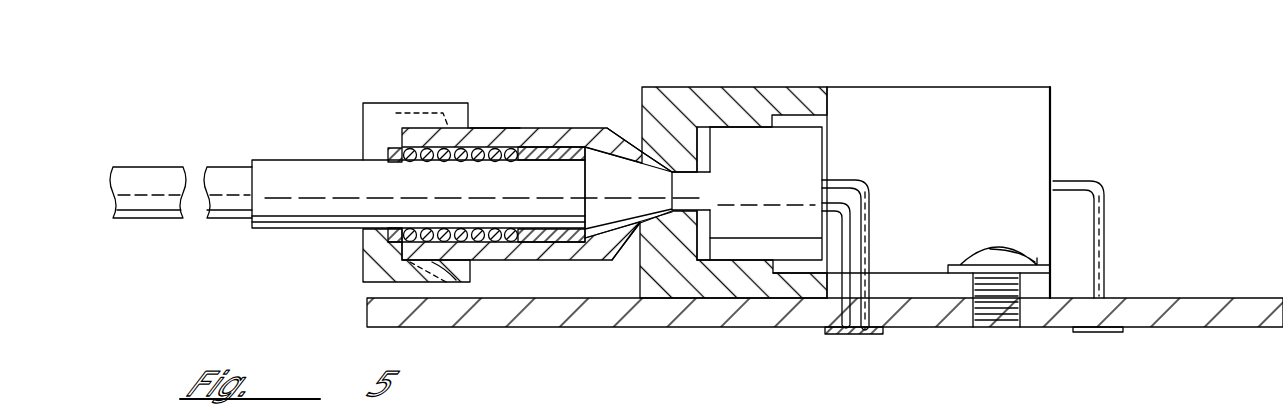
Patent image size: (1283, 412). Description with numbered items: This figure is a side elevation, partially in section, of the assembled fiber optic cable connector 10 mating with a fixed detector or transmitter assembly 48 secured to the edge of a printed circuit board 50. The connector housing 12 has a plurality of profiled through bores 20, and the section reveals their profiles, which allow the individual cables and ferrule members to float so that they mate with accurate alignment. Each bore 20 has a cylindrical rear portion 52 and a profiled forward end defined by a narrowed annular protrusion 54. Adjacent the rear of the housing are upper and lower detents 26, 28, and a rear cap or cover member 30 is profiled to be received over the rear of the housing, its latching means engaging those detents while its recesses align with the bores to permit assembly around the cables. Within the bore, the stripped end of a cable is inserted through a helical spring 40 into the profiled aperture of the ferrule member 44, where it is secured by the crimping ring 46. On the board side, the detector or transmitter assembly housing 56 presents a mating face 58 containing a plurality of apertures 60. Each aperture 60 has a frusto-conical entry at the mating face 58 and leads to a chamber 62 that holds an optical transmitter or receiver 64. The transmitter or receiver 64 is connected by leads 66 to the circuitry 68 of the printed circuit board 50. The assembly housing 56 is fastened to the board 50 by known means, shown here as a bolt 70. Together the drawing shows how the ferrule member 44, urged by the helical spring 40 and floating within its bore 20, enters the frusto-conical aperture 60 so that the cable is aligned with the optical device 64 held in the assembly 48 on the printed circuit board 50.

The fiber optic cable connector 10 is at (493, 120).
The housing 12 is at (572, 127).
The profiled through bores 20 is at (505, 243).
The upper detent 26 is at (413, 118).
The lower detent 28 is at (452, 265).
The rear cap or cover member 30 is at (382, 95).
The helical spring 40 is at (402, 150).
The ferrule member 44 is at (278, 170).
The crimping ring 46 is at (540, 150).
The detector or transmitter assembly 48 is at (947, 80).
The printed circuit board 50 is at (1172, 300).
The cylindrical rear portion 52 is at (400, 245).
The narrowed annular protrusion 54 is at (624, 228).
The detector or transmitter assembly housing 56 is at (642, 102).
The mating face 58 is at (642, 117).
The apertures 60 is at (668, 153).
The chamber 62 is at (703, 137).
The optical transmitter or receiver 64 is at (787, 140).
The leads 66 is at (870, 192).
The circuitry 68 is at (872, 337).
The bolt 70 is at (992, 328).